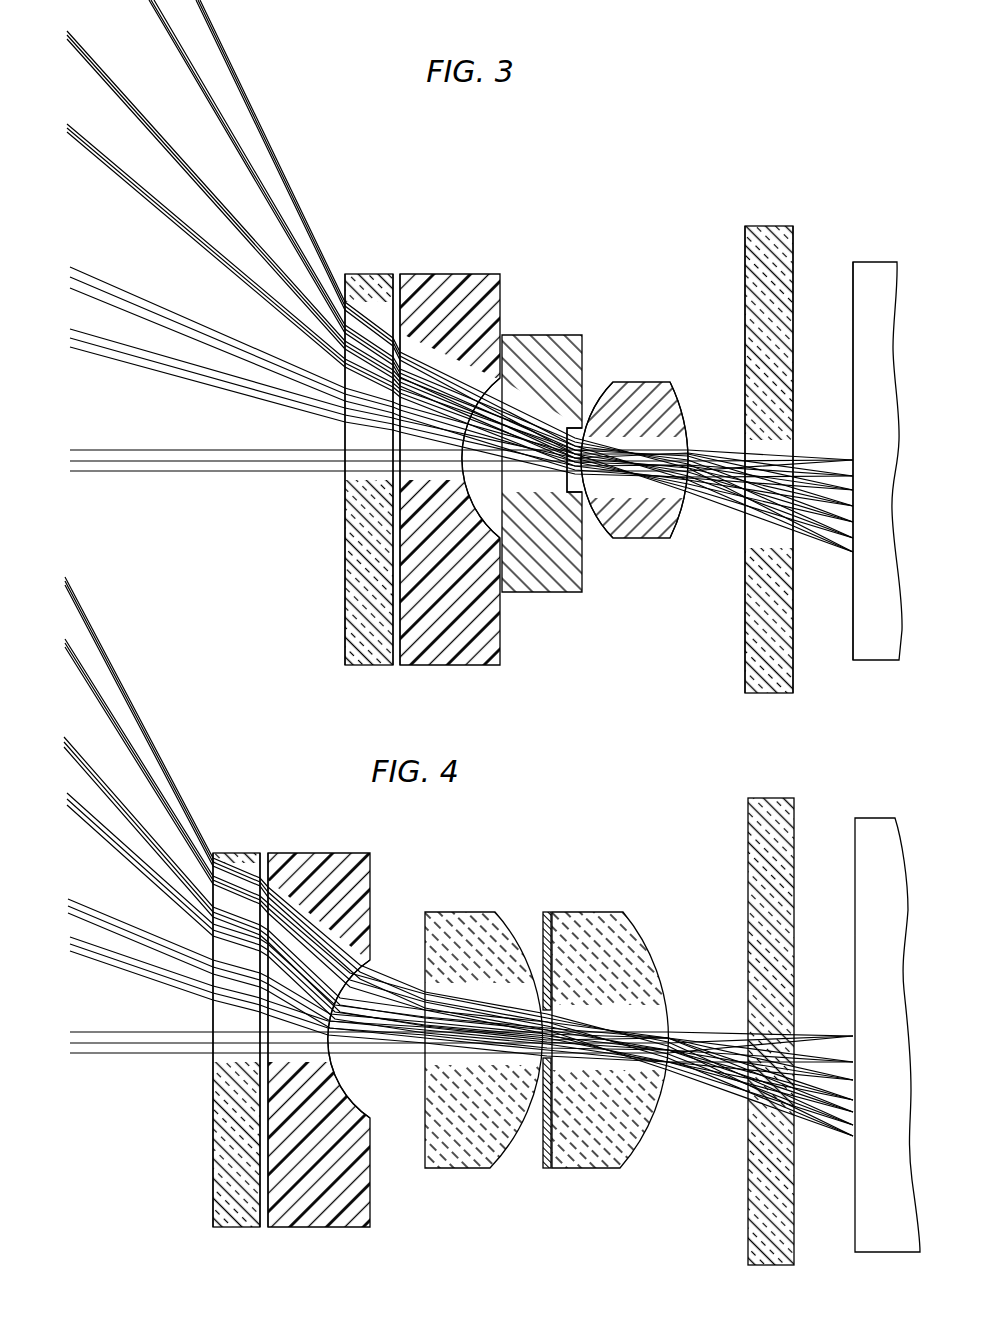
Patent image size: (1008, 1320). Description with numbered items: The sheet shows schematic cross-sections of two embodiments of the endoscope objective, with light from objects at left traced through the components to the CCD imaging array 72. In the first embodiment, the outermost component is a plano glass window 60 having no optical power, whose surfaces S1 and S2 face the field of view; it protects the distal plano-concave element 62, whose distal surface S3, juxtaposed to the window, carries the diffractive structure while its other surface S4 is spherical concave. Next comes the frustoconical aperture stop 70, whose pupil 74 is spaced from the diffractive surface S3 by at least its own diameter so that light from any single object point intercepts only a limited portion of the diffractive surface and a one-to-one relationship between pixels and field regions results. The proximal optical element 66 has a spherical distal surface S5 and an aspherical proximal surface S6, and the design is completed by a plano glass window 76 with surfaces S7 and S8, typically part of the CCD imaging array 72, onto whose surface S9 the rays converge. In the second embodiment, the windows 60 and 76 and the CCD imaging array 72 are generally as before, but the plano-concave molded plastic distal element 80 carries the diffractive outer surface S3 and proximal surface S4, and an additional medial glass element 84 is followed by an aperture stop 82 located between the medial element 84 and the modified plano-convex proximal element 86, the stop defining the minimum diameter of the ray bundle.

In FIG. 3, the plano glass window 60 is at (368, 274).
In FIG. 4, the plano glass window 60 is at (236, 853).
In FIG. 3, the plano-concave element 62 is at (437, 274).
In FIG. 3, the aperture stop 70 is at (537, 335).
In FIG. 3, the pupil 74 is at (583, 428).
In FIG. 3, the proximal optical element 66 is at (655, 382).
In FIG. 3, the plano glass window 76 is at (758, 226).
In FIG. 4, the plano glass window 76 is at (765, 798).
In FIG. 3, the CCD imaging array 72 is at (866, 262).
In FIG. 4, the CCD imaging array 72 is at (868, 817).
In FIG. 4, the plano-concave molded plastic distal element 80 is at (348, 853).
In FIG. 4, the aperture stop 82 is at (541, 1153).
In FIG. 4, the medial glass element 84 is at (470, 912).
In FIG. 4, the plano-convex proximal element 86 is at (600, 912).
In FIG. 3, the surface of window 60 S1 is at (345, 540).
In FIG. 4, the surface of window 60 S1 is at (213, 1190).
In FIG. 3, the surface of the distal window S2 is at (393, 592).
In FIG. 4, the surface of the distal window S2 is at (258, 1198).
In FIG. 3, the diffractive surface S3 is at (402, 628).
In FIG. 4, the diffractive surface S3 is at (270, 880).
In FIG. 3, the spherical concave surface S4 is at (478, 518).
In FIG. 4, the spherical concave surface S4 is at (345, 1097).
In FIG. 3, the spherical distal surface S5 is at (602, 535).
In FIG. 3, the aspherical proximal surface S6 is at (673, 530).
In FIG. 3, the surface of window 76 S7 is at (745, 664).
In FIG. 3, the surface of window 76 S8 is at (793, 622).
In FIG. 3, the surface of CCD imaging array S9 is at (853, 647).